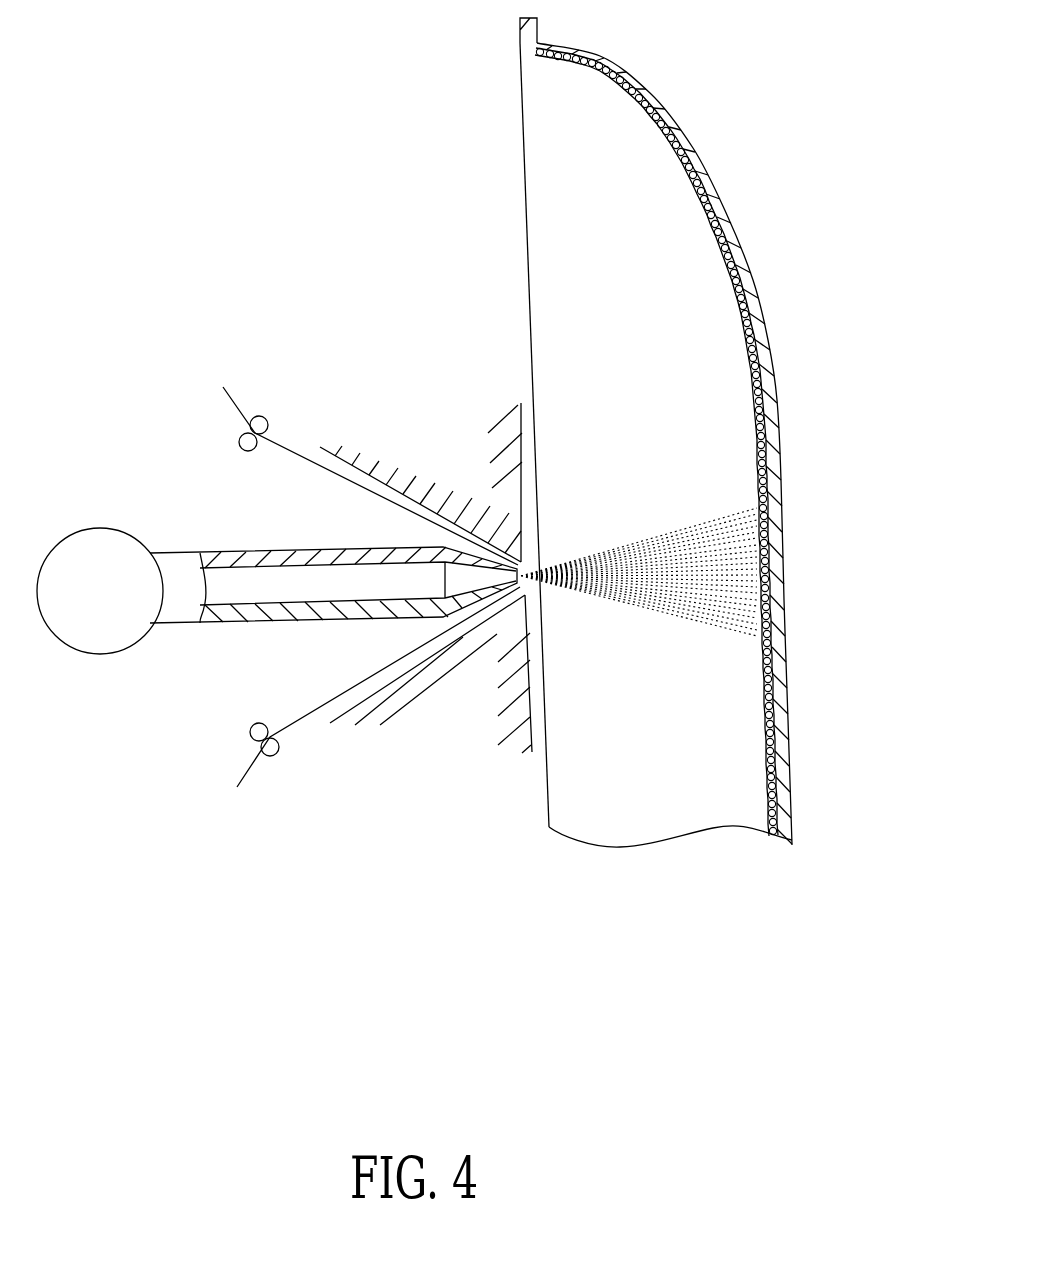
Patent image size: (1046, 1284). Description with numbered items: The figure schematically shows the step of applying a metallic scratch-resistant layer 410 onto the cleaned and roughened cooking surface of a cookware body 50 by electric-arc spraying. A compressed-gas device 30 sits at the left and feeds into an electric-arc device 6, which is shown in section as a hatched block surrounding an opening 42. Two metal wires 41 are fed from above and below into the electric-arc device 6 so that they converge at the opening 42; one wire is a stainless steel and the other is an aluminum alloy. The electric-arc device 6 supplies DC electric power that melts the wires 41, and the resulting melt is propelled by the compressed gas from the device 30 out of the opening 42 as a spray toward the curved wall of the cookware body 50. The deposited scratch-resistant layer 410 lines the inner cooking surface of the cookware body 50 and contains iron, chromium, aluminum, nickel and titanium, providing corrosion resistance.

The electric-arc device 6 is at (412, 402).
The device 30 is at (102, 540).
The metal wire 41 is at (343, 478).
The opening 42 is at (525, 565).
The scratch-resistant layer 410 is at (755, 404).
The cookware body 50 is at (779, 444).